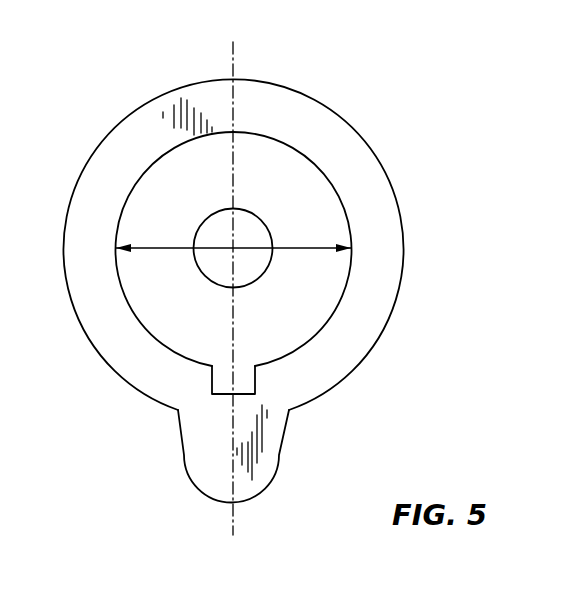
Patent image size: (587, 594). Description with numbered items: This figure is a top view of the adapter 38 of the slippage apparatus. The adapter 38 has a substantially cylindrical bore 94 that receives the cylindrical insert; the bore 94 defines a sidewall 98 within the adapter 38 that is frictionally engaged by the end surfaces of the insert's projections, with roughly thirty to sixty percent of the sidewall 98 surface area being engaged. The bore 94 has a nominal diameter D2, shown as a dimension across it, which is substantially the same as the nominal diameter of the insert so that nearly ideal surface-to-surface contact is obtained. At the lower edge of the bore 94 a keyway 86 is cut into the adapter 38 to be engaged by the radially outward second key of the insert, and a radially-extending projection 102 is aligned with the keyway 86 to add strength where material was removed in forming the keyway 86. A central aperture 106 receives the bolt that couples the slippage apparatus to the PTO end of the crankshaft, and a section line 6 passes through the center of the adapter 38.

The adapter 38 is at (416, 121).
The bore 94 is at (268, 163).
The sidewall 98 is at (338, 291).
The aperture 106 is at (220, 212).
The nominal diameter D2 is at (308, 248).
The keyway 86 is at (243, 393).
The radially-extending projection 102 is at (202, 458).
The section line 6- 6 is at (233, 42).